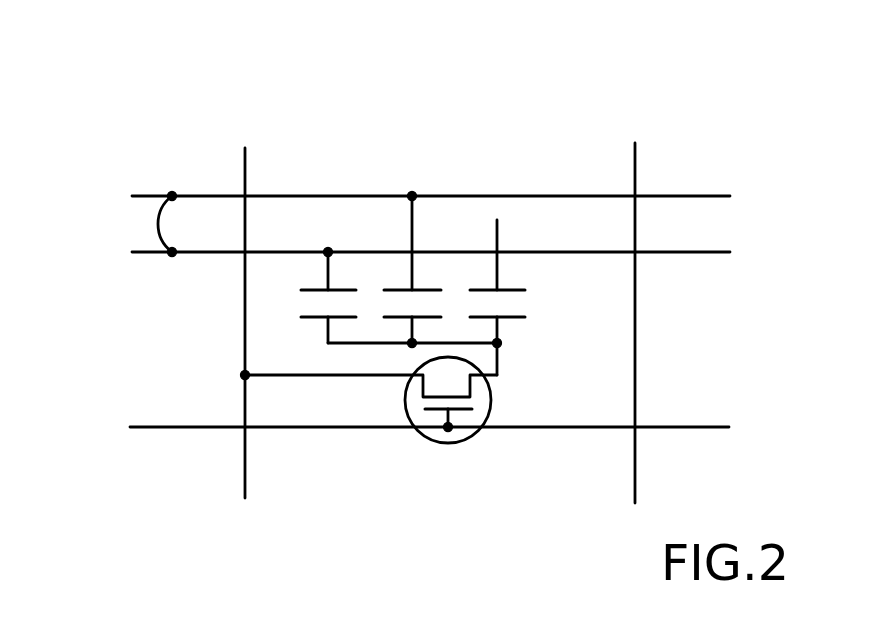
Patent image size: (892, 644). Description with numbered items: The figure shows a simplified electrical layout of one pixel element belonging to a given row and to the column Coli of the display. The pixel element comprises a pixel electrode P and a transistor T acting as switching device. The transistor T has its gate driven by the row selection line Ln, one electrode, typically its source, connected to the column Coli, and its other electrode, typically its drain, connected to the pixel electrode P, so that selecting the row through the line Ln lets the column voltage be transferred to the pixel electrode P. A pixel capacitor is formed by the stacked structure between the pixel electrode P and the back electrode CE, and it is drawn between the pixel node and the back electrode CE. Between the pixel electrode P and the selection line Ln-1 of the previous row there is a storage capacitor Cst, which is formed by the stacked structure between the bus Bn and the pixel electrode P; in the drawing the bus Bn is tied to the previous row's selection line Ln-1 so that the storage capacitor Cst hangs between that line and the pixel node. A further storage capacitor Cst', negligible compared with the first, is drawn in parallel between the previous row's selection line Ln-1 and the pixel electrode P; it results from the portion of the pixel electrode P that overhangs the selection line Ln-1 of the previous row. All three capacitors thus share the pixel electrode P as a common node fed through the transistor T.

The selection line of the previous row Ln-1 is at (408, 181).
The bus Bn is at (410, 226).
The row selection line Ln is at (415, 412).
The column Coli is at (250, 307).
The storage capacitor Cst is at (310, 297).
The storage capacitor Cst' is at (403, 269).
The back electrode CE is at (500, 260).
The pixel electrode P is at (509, 344).
The transistor T is at (491, 400).